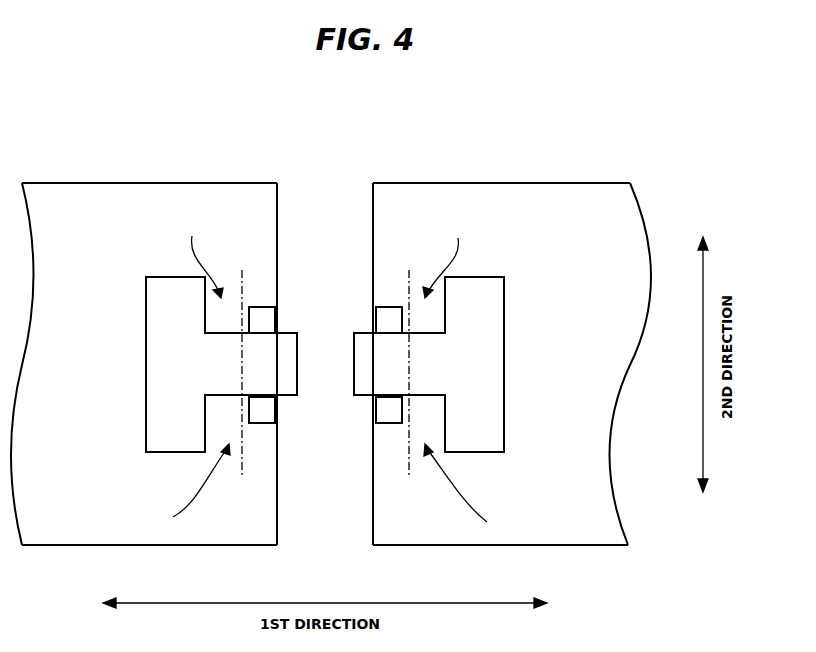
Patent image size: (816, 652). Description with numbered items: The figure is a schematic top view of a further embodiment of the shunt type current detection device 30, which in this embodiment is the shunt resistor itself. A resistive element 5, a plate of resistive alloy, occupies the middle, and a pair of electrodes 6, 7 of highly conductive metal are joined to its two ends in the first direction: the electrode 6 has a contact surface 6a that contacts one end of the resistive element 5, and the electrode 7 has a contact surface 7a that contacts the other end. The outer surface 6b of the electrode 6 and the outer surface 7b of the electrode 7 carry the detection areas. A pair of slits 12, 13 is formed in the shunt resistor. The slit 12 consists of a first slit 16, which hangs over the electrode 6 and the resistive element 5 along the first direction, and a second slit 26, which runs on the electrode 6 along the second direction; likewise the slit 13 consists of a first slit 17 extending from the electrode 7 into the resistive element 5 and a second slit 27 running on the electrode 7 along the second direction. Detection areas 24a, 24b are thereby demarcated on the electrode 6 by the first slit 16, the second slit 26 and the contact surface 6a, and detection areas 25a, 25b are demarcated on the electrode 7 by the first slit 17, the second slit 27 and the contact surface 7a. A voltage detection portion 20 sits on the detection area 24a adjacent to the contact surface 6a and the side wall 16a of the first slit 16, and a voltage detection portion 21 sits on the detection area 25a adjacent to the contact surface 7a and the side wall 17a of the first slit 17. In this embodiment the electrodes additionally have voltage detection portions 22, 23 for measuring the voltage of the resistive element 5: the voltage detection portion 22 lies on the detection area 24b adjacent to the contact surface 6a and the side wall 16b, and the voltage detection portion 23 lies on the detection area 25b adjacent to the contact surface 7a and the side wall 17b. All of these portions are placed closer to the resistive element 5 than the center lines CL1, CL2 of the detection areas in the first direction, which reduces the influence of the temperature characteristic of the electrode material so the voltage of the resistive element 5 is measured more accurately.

The current detection device 30 is at (346, 325).
The resistive element 5 is at (322, 200).
The electrode 6 is at (147, 328).
The contact surface 6a is at (278, 478).
The surface of the electrode 6b is at (110, 207).
The electrode 7 is at (508, 322).
The contact surface 7a is at (371, 478).
The surface of the electrode 7b is at (539, 195).
The slit 12 is at (190, 368).
The slit 13 is at (459, 367).
The first slit 16 is at (227, 367).
The side wall of the first slit 16a is at (268, 334).
The side wall of the first slit 16b is at (268, 394).
The first slit 17 is at (422, 367).
The side wall of the first slit 17a is at (377, 335).
The side wall of the first slit 17b is at (385, 394).
The voltage detection portion 20 is at (267, 306).
The voltage detection portion 21 is at (384, 306).
The voltage detection portion 22 is at (262, 424).
The voltage detection portion 23 is at (385, 424).
The detection area 24a is at (196, 254).
The detection area 24b is at (184, 493).
The detection area 25a is at (457, 254).
The detection area 25b is at (476, 492).
The second slit 26 is at (174, 420).
The second slit 27 is at (473, 418).
The center line CL1 is at (232, 361).
The center line CL2 is at (423, 361).